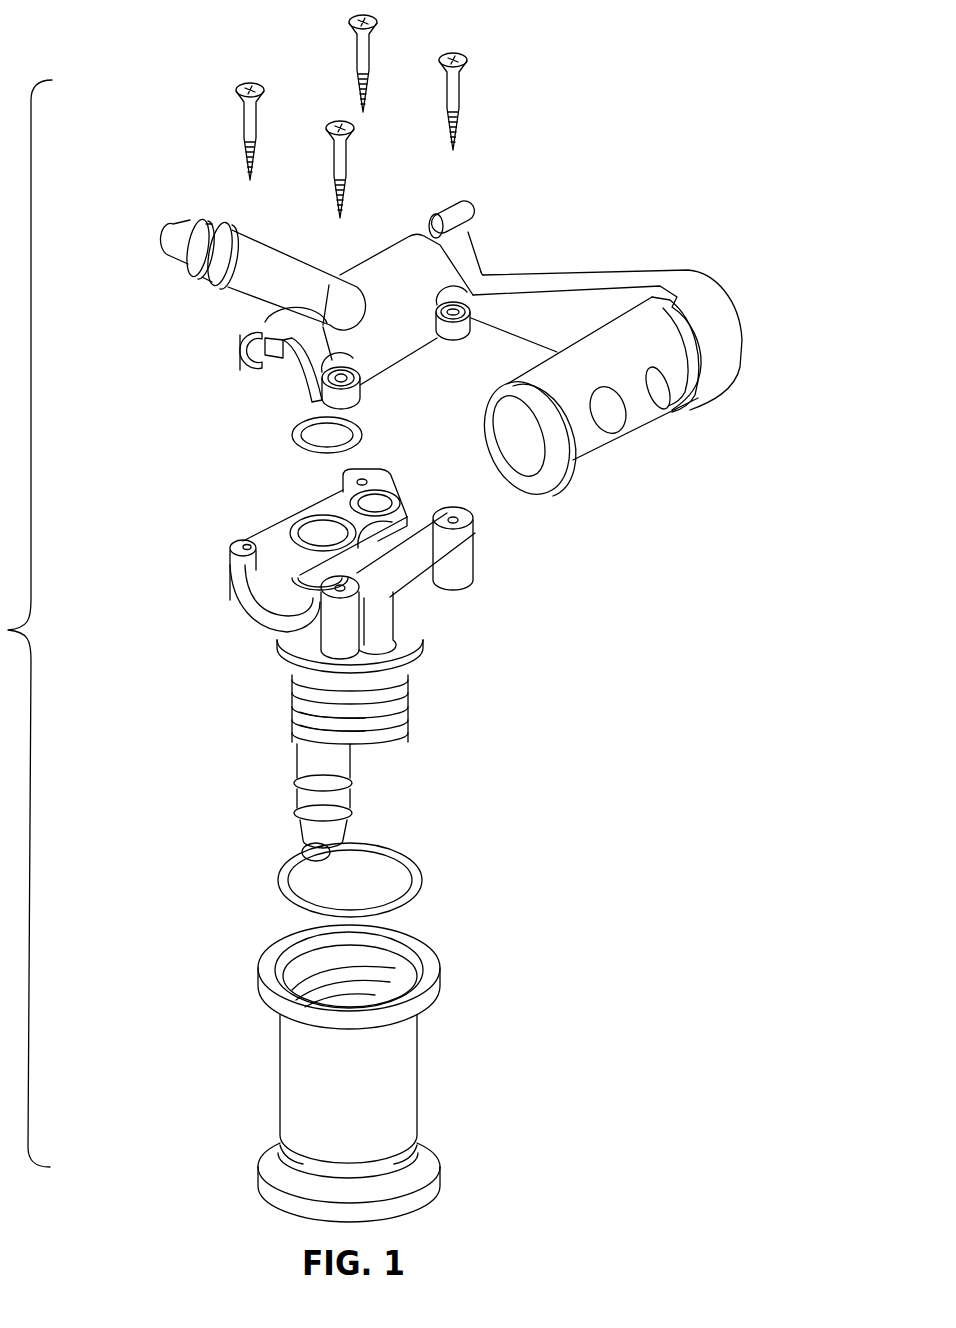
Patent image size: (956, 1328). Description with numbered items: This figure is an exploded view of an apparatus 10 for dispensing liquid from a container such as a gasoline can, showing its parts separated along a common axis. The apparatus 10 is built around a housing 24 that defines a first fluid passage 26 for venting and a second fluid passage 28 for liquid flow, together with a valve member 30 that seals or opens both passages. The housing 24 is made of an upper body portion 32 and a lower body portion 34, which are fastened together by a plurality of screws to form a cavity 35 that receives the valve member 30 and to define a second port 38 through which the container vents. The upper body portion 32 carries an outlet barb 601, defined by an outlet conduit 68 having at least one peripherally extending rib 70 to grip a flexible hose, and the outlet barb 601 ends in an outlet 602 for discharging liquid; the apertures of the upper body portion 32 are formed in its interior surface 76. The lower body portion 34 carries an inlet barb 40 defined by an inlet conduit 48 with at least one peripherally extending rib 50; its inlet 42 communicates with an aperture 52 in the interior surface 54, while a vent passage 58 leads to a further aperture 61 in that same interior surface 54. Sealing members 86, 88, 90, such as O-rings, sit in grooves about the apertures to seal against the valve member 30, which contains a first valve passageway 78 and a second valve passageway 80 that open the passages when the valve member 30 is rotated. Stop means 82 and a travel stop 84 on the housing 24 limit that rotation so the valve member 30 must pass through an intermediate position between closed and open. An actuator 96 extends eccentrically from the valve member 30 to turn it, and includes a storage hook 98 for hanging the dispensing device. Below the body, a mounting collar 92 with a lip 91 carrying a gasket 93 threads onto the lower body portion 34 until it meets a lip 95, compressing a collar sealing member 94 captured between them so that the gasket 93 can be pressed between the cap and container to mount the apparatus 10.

The apparatus 10 is at (114, 462).
The housing 24 is at (384, 233).
The first fluid passage 26 is at (424, 601).
The second fluid passage 28 is at (273, 656).
The valve member 30 is at (490, 369).
The upper body portion 32 is at (368, 268).
The lower body portion 34 is at (262, 626).
The cavity 35 is at (258, 586).
The second port 38 is at (527, 447).
The inlet barb 40 is at (277, 745).
The inlet 42 is at (303, 858).
The inlet conduit 48 is at (335, 757).
The peripherally extending rib 50 is at (352, 812).
The aperture 52 is at (285, 572).
The interior surface 54 is at (255, 548).
The vent passage 58 is at (393, 598).
The aperture 61 is at (413, 523).
The outlet conduit 68 is at (227, 244).
The peripherally extending rib 70 is at (210, 277).
The interior surface 76 is at (258, 366).
The first valve passageway 78 is at (662, 392).
The second valve passageway 80 is at (607, 415).
The stop means 82 is at (283, 372).
The travel stop 84 is at (272, 352).
The sealing member 86 is at (338, 522).
The sealing member 88 is at (400, 497).
The sealing member 90 is at (356, 432).
The lip 91 is at (440, 978).
The mounting collar 92 is at (407, 1065).
The gasket 93 is at (428, 1163).
The collar sealing member 94 is at (418, 875).
The lip 95 is at (415, 663).
The actuator 96 is at (644, 259).
The storage hook 98 is at (468, 208).
The outlet barb 601 is at (251, 223).
The outlet 602 is at (165, 236).